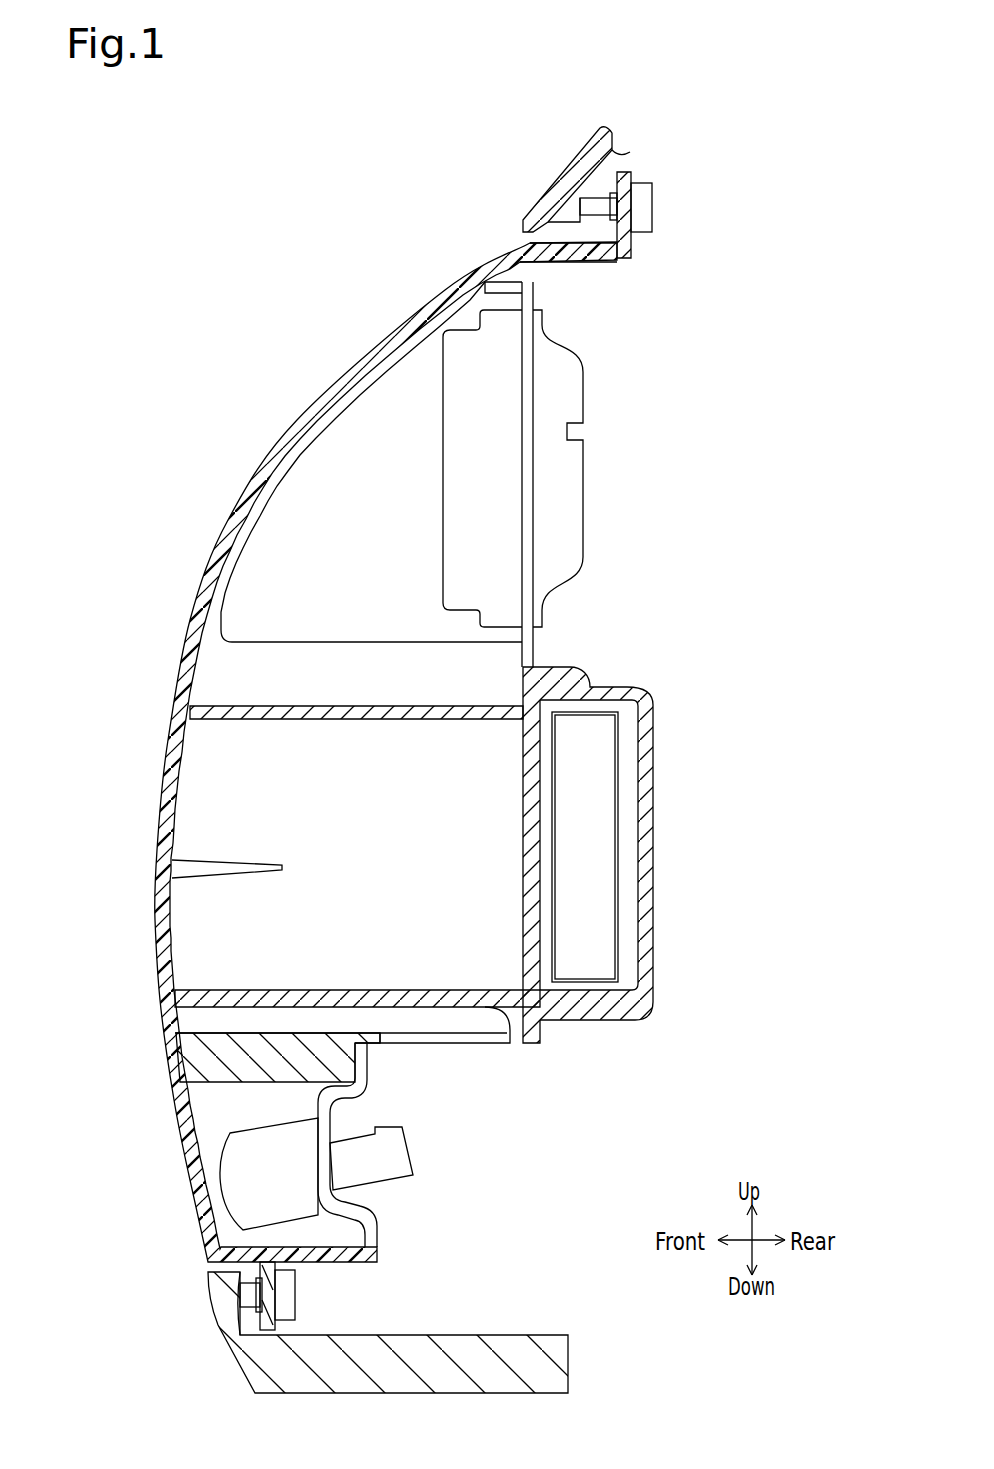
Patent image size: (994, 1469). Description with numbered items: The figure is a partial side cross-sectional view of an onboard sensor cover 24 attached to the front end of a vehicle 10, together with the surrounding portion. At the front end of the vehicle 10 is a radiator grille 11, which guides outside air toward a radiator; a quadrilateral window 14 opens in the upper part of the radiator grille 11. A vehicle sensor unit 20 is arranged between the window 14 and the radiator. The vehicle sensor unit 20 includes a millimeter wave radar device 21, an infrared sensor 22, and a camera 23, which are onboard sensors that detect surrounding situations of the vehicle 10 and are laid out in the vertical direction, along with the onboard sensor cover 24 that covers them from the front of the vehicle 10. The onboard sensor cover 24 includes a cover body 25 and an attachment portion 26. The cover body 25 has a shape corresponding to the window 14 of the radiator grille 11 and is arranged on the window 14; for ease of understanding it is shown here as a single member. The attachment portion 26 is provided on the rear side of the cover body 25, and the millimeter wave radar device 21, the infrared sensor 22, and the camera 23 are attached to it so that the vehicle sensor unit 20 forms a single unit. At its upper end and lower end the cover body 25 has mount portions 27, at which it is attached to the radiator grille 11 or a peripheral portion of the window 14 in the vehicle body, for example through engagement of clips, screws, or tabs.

The vehicle 10 is at (582, 162).
The radiator grille 11 is at (405, 764).
The window 14 is at (526, 232).
The vehicle sensor unit 20 is at (328, 752).
The millimeter wave radar device 21 is at (570, 497).
The infrared sensor 22 is at (608, 880).
The camera 23 is at (287, 1133).
The onboard sensor cover 24 is at (178, 742).
The cover body 25 is at (328, 752).
The attachment portion 26 is at (344, 652).
The mount portions 27 is at (628, 212).